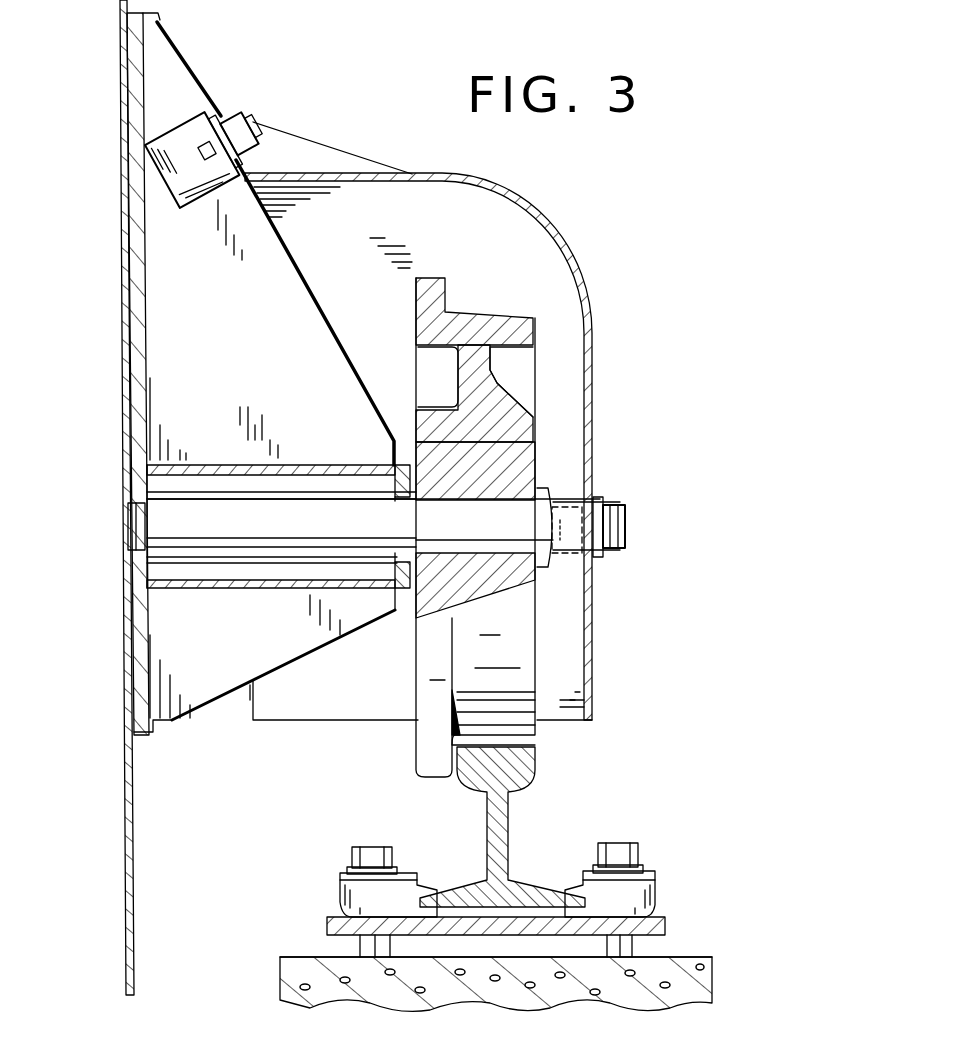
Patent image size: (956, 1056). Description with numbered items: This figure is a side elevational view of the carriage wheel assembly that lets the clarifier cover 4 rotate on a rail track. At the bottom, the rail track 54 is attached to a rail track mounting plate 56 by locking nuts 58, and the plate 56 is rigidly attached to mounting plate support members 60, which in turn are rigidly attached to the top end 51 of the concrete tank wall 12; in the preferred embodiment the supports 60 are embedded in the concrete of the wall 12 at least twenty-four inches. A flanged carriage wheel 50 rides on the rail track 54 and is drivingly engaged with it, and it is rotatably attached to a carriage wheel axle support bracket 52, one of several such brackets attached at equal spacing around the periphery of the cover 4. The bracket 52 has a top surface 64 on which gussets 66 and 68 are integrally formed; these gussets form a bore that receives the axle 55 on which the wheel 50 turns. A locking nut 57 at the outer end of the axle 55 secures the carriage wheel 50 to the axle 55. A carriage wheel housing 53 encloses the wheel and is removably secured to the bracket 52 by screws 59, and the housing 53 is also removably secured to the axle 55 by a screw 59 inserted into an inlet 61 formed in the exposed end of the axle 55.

The cover 4 is at (121, 152).
The tank wall 12 is at (695, 987).
The flanged carriage wheel 50 is at (462, 313).
The top end 51 is at (700, 957).
The carriage wheel axle support bracket 52 is at (176, 62).
The carriage wheel housing 53 is at (563, 256).
The rail track 54 is at (500, 832).
The axle 55 is at (484, 536).
The rail track mounting plate 56 is at (657, 924).
The locking nut 57 is at (547, 498).
The locking nut 58 is at (352, 854).
The screw 59 is at (250, 128).
The mounting plate support member 60 is at (632, 952).
The inlet 61 is at (573, 545).
The top surface 64 is at (133, 310).
The gusset 66 is at (280, 363).
The gusset 68 is at (243, 642).